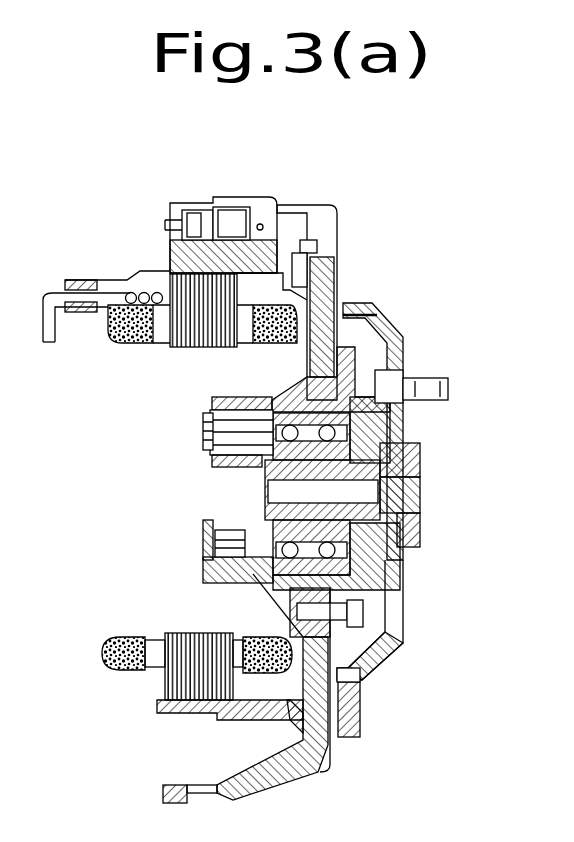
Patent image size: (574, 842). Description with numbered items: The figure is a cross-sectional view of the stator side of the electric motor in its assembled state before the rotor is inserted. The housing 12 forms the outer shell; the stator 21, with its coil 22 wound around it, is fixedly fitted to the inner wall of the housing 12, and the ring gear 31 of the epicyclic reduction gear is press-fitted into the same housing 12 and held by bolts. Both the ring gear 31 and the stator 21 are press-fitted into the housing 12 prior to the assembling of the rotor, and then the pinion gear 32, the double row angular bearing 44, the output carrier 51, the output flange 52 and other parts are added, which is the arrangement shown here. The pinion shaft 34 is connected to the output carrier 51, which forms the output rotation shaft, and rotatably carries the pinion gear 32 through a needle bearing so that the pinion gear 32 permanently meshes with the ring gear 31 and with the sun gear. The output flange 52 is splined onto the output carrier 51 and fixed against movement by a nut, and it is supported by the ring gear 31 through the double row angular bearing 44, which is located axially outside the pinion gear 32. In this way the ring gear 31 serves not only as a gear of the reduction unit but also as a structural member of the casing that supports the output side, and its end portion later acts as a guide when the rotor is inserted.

The housing 12 is at (330, 735).
The stator 21 is at (213, 300).
The coil 22 is at (337, 258).
The ring gear 31 is at (350, 675).
The pinion gear 32 is at (232, 458).
The pinion shaft 34 is at (270, 397).
The double row angular bearing 44 is at (323, 400).
The output carrier 51 is at (415, 392).
The output flange 52 is at (388, 540).